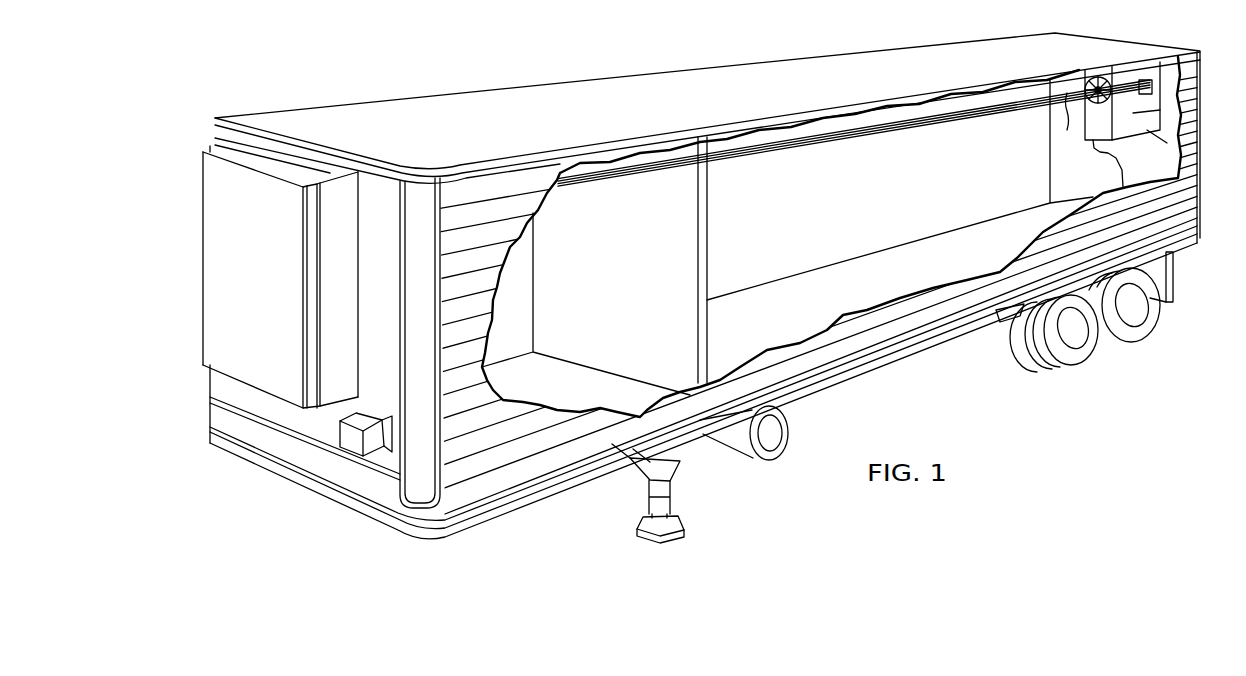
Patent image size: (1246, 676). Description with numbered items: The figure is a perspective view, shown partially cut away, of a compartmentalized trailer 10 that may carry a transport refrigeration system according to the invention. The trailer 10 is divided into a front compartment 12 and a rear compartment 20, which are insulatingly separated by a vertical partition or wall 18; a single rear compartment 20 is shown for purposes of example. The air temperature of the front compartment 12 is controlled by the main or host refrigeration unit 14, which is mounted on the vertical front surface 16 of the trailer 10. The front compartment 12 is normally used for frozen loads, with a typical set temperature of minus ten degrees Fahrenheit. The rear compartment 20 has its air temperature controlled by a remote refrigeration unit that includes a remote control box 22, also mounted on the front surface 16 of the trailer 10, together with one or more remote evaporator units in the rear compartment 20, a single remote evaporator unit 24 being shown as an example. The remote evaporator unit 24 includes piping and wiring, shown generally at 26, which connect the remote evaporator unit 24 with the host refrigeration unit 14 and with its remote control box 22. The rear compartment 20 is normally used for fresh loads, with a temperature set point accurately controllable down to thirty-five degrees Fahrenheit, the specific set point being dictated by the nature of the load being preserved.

The compartmentalized trailer 10 is at (575, 541).
The front compartment 12 is at (630, 358).
The host refrigeration unit 14 is at (203, 177).
The vertical front surface 16 is at (387, 196).
The vertical partition 18 is at (688, 190).
The rear compartment 20 is at (860, 228).
The remote control box 22 is at (381, 452).
The remote evaporator unit 24 is at (1200, 108).
The piping and wiring 26 is at (1108, 155).